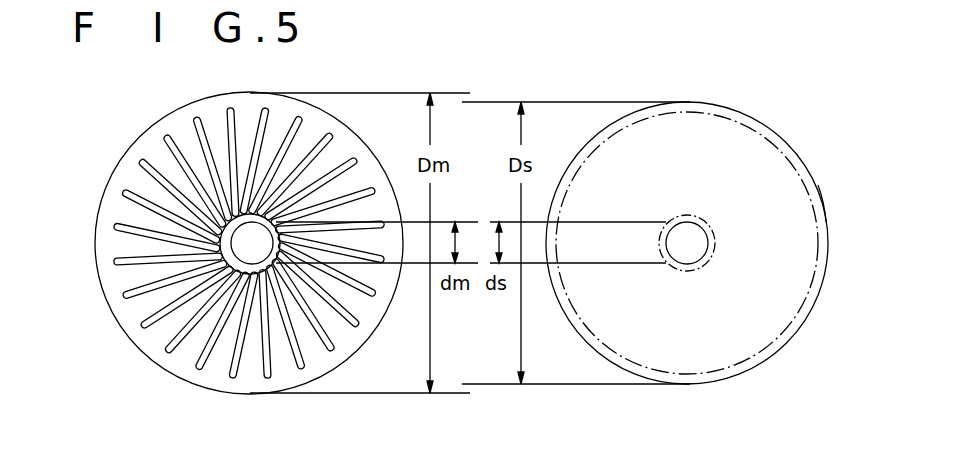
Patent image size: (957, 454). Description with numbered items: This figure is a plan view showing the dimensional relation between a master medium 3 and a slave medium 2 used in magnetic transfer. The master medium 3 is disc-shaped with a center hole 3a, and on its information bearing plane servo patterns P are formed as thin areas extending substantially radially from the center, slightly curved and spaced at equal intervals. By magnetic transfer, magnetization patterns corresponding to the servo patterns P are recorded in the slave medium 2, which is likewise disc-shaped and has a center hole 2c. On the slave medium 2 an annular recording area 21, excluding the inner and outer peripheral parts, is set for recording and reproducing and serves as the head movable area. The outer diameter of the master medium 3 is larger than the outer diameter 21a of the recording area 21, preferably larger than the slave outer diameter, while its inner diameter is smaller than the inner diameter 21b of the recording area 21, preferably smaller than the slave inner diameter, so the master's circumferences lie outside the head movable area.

The slave medium 2 is at (728, 106).
The recording area 21 is at (760, 152).
The outer diameter of the recording area 21a is at (820, 207).
The inner diameter of the recording area 21b is at (676, 272).
The center hole 2c is at (705, 235).
The master medium 3 is at (175, 112).
The center hole 3a is at (143, 307).
The servo patterns P is at (127, 193).